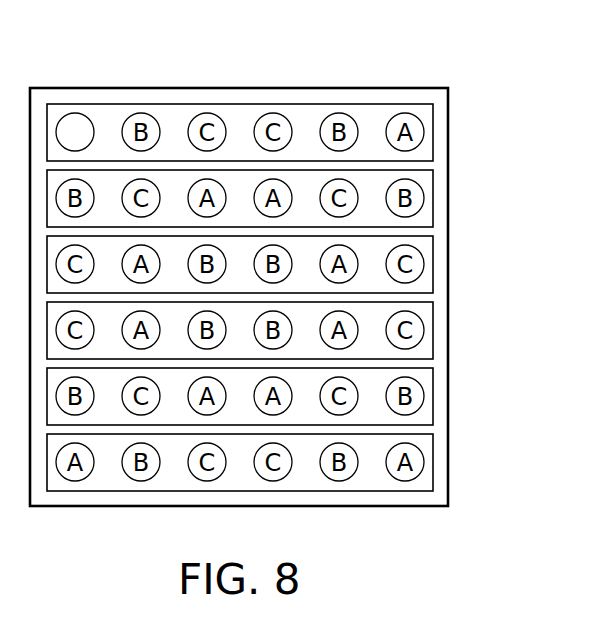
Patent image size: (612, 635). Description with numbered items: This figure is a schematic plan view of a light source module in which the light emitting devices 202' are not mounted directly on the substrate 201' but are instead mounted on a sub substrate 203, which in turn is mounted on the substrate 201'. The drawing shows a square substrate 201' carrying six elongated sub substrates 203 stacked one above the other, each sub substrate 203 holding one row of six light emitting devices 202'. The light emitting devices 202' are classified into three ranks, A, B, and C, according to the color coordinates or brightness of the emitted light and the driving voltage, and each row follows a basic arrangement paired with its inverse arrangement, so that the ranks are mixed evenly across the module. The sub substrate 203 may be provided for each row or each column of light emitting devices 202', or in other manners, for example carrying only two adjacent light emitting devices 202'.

The substrate 201' is at (295, 285).
The light emitting device 202' is at (122, 85).
The sub substrate 203 is at (370, 104).